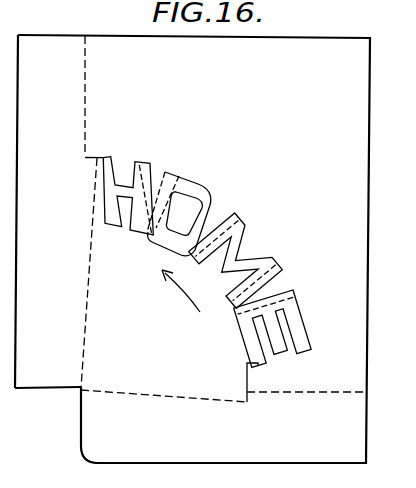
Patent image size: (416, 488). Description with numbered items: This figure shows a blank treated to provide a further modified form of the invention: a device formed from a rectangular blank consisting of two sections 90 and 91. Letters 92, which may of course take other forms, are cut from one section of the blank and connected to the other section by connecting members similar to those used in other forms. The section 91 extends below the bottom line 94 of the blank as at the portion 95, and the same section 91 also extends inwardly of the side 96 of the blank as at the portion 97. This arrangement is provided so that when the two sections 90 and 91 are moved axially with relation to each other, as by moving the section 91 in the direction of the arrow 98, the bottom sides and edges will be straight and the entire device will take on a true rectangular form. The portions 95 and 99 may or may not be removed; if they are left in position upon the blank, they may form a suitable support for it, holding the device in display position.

The section 90 is at (192, 249).
The section 91 is at (169, 280).
The letters 92 is at (194, 190).
The bottom line 94 is at (308, 392).
The portion 95 is at (185, 436).
The side 96 is at (85, 97).
The portion 97 is at (98, 153).
The arrow 98 is at (180, 290).
The portion 99 is at (48, 315).